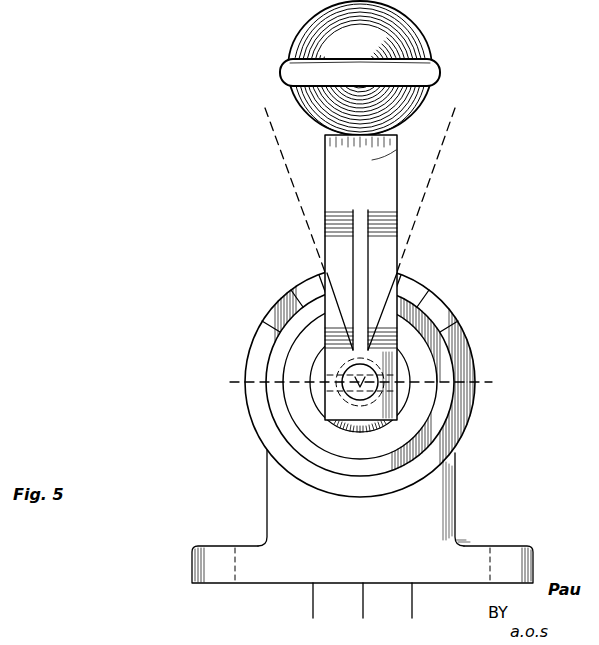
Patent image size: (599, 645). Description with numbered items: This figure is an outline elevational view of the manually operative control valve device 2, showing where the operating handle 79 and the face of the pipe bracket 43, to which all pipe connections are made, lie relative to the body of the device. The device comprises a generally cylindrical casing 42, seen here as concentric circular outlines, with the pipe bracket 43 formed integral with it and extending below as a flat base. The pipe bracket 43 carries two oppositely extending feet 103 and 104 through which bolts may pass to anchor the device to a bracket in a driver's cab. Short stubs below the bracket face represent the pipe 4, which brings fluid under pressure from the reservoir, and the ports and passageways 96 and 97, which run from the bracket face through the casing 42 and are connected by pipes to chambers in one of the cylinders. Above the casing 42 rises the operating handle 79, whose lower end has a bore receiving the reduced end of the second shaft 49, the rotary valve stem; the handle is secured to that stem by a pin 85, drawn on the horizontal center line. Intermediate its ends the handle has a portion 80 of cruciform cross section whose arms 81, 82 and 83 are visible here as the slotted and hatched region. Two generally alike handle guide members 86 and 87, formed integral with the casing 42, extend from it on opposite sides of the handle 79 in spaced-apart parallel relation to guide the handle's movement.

The manually operative control valve device 2 is at (258, 441).
The pipe 4 is at (363, 598).
The casing 42 is at (447, 476).
The pipe bracket 43 is at (256, 572).
The second shaft 49 is at (340, 396).
The operating handle 79 is at (380, 160).
The portion of cruciform shape 80 is at (406, 242).
The arm 81 is at (376, 228).
The arm 82 is at (358, 240).
The arm 83 is at (338, 258).
The pin 85 is at (484, 382).
The handle guide member 86 is at (445, 313).
The handle guide member 87 is at (277, 315).
The port and passageway 96 is at (313, 597).
The port and passageway 97 is at (411, 595).
The foot 103 is at (528, 551).
The foot 104 is at (193, 549).